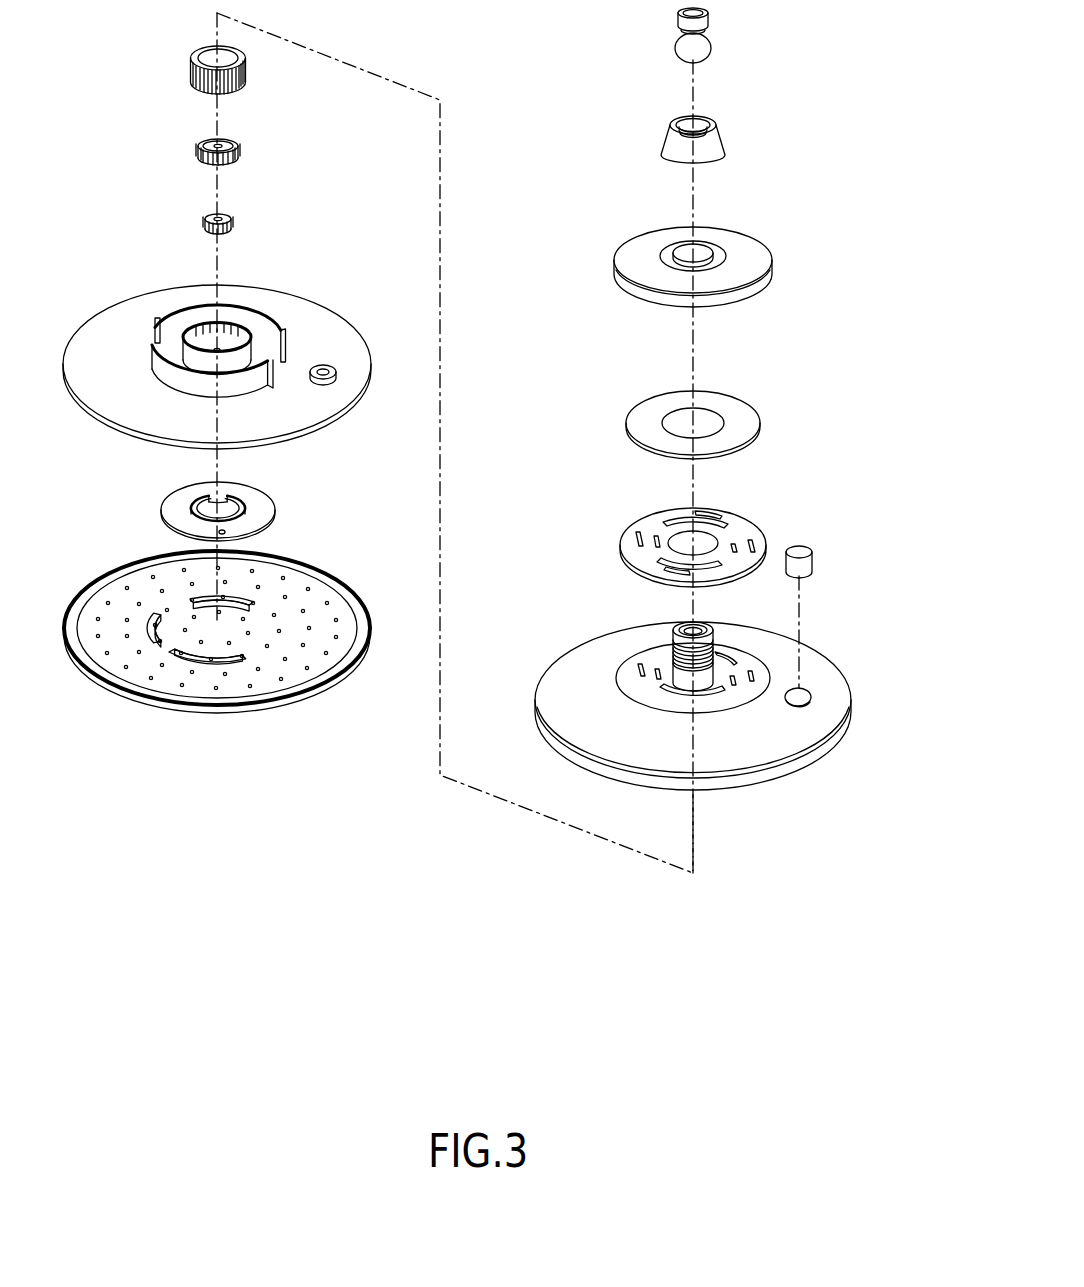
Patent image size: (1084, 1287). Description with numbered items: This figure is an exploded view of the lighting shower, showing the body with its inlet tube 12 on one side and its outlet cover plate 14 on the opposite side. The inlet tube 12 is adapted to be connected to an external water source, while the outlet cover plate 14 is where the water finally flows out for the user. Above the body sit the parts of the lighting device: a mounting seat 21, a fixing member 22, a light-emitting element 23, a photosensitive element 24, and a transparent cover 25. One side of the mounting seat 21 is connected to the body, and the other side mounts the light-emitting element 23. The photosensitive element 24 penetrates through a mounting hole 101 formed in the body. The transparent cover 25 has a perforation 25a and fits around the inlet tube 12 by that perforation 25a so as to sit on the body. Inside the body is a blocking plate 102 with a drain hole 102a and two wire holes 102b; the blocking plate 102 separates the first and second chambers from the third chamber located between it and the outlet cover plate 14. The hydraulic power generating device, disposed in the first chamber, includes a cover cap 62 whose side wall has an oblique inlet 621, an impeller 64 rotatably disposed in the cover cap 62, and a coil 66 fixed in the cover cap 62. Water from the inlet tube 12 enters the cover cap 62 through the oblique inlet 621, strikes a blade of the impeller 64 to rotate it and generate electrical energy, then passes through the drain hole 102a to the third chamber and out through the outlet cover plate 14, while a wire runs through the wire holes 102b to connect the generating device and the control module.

The inlet tube 12 is at (673, 637).
The outlet cover plate 14 is at (300, 675).
The mounting seat 21 is at (747, 530).
The fixing member 22 is at (717, 142).
The light-emitting element 23 is at (733, 415).
The photosensitive element 24 is at (812, 563).
The transparent cover 25 is at (761, 249).
The perforation 25a is at (703, 245).
The cover cap 62 is at (200, 78).
The oblique inlet 621 is at (250, 72).
The impeller 64 is at (240, 152).
The coil 66 is at (232, 221).
The mounting hole 101 is at (813, 698).
The blocking plate 102 is at (296, 503).
The drain hole 102a is at (243, 503).
The wire hole 102b is at (226, 533).